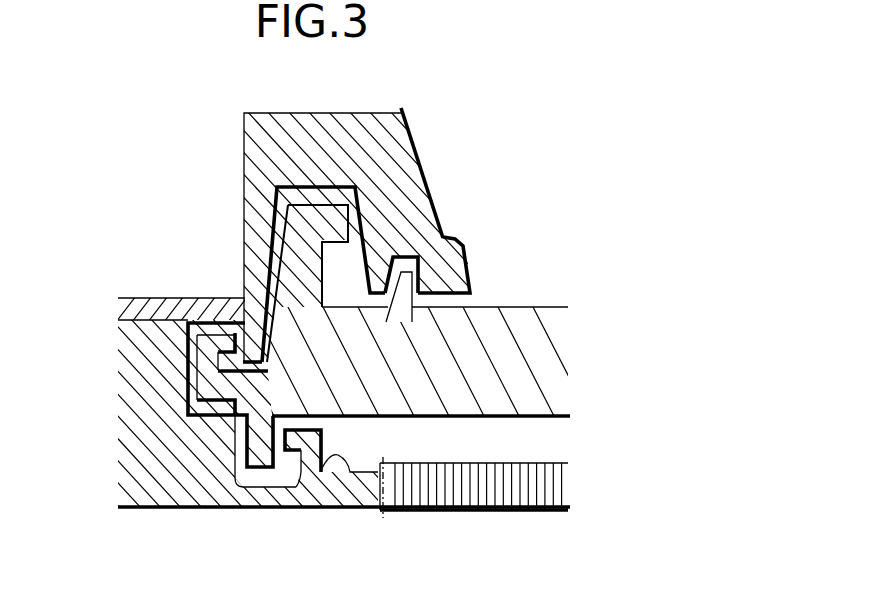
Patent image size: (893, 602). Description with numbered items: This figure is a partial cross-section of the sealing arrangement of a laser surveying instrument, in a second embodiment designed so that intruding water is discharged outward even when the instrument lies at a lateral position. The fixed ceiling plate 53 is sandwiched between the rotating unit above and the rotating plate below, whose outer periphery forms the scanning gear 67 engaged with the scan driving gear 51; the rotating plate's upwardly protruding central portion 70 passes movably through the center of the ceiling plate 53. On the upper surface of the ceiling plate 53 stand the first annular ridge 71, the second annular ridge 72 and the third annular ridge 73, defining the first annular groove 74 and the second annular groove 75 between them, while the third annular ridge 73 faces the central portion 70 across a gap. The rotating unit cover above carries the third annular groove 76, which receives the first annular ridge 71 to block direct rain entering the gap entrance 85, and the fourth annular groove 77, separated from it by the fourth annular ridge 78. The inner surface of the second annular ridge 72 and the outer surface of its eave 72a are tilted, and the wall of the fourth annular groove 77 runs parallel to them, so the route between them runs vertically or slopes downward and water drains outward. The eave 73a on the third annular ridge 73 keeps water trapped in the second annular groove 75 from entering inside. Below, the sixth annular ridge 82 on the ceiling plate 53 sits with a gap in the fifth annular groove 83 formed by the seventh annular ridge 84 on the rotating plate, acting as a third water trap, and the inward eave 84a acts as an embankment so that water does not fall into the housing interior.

The scan driving gear 51 is at (520, 512).
The ceiling plate 53 is at (516, 308).
The scanning gear 67 is at (378, 487).
The central portion 70 is at (142, 348).
The first annular ridge 71 is at (463, 270).
The second annular ridge 72 is at (303, 204).
The eave 72a is at (335, 220).
The third annular ridge 73 is at (197, 353).
The eave 73a is at (227, 340).
The first annular groove 74 is at (333, 277).
The second annular groove 75 is at (228, 362).
The third annular groove 76 is at (420, 280).
The fourth annular groove 77 is at (332, 195).
The fourth annular ridge 78 is at (383, 295).
The sixth annular ridge 82 is at (264, 474).
The fifth annular groove 83 is at (245, 477).
The seventh annular ridge 84 is at (327, 468).
The eave 84a is at (298, 423).
The gap entrance 85 is at (465, 301).